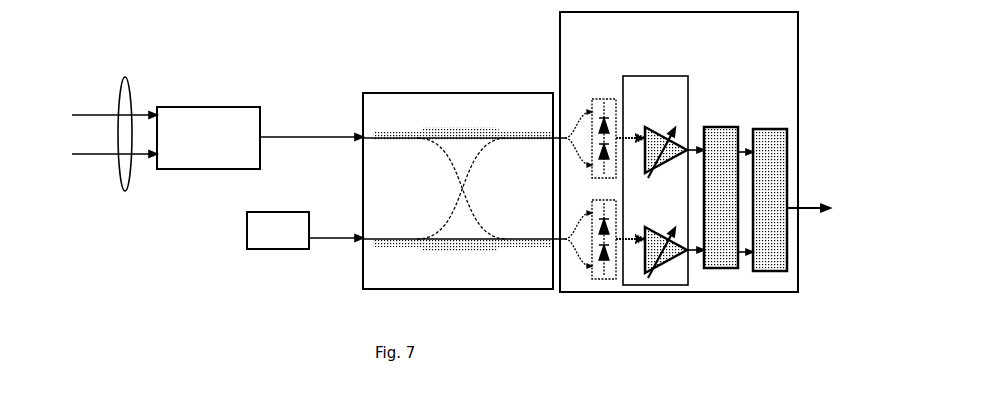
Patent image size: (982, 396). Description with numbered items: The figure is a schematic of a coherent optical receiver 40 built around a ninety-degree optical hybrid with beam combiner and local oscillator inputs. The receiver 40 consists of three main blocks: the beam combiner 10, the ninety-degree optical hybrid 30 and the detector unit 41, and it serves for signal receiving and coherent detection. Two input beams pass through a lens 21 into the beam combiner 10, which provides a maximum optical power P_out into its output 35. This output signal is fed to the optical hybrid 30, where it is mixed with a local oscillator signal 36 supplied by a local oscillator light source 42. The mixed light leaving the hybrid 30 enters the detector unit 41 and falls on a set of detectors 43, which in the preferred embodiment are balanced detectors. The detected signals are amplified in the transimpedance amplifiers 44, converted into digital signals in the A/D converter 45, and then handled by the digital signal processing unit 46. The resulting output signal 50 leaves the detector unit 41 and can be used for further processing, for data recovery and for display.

The beam combiner 10 is at (208, 138).
The lens 21 is at (123, 146).
The optical 90-degrees hybrid 30 is at (464, 191).
The output 35 is at (311, 141).
The local oscillator signal 36 is at (336, 230).
The optical receiver 40 is at (253, 66).
The detector unit 41 is at (679, 152).
The local oscillator light source 42 is at (278, 230).
The set of detectors 43 is at (605, 175).
The transimpedance amplifiers 44 is at (688, 180).
The A/D converter 45 is at (721, 189).
The digital signal processing unit (DSP) 46 is at (770, 192).
The output signal 50 is at (808, 199).